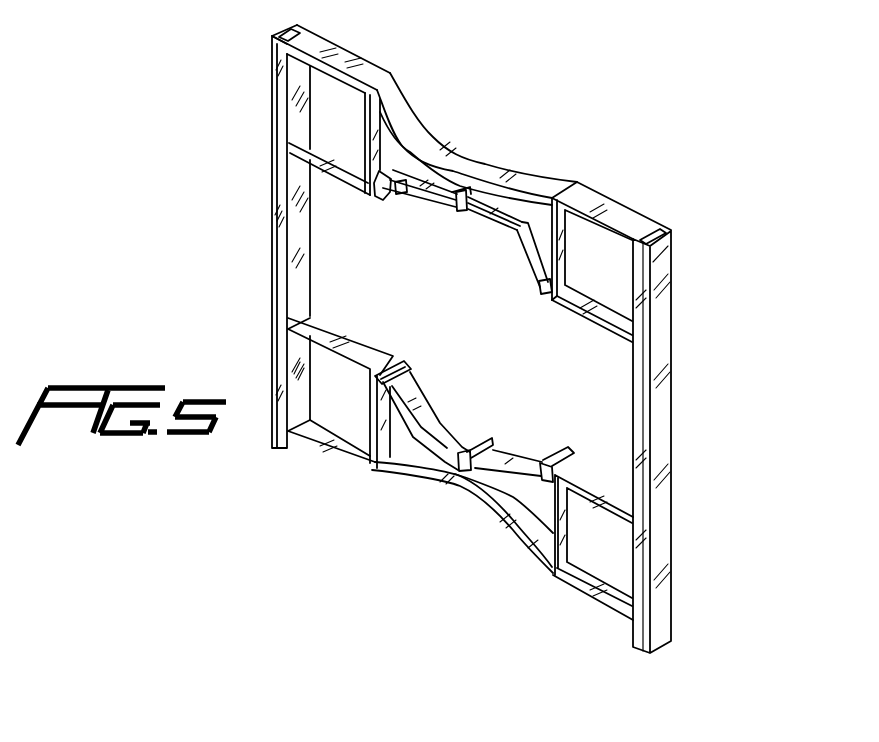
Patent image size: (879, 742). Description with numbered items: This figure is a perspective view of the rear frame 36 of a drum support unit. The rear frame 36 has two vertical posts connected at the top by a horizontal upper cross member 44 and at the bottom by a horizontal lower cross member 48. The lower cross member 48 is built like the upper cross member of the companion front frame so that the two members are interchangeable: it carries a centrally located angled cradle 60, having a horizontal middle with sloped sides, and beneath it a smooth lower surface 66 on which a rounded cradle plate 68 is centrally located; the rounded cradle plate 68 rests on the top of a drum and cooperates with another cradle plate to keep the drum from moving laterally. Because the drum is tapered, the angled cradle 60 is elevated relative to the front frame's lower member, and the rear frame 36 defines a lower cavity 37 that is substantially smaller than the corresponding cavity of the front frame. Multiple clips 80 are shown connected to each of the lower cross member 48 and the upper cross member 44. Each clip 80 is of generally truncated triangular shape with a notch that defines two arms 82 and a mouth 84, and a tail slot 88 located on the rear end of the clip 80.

The rear frame 36 is at (670, 195).
The lower cavity 37 is at (542, 351).
The upper cross member 44 is at (595, 188).
The lower cross member 48 is at (346, 327).
The angled cradle 60 is at (489, 220).
The lower surface 66 is at (322, 444).
The rounded cradle plate 68 is at (393, 478).
The clip 80 is at (563, 448).
The arms 82 is at (383, 205).
The mouth 84 is at (393, 203).
The tail slot 88 is at (390, 160).